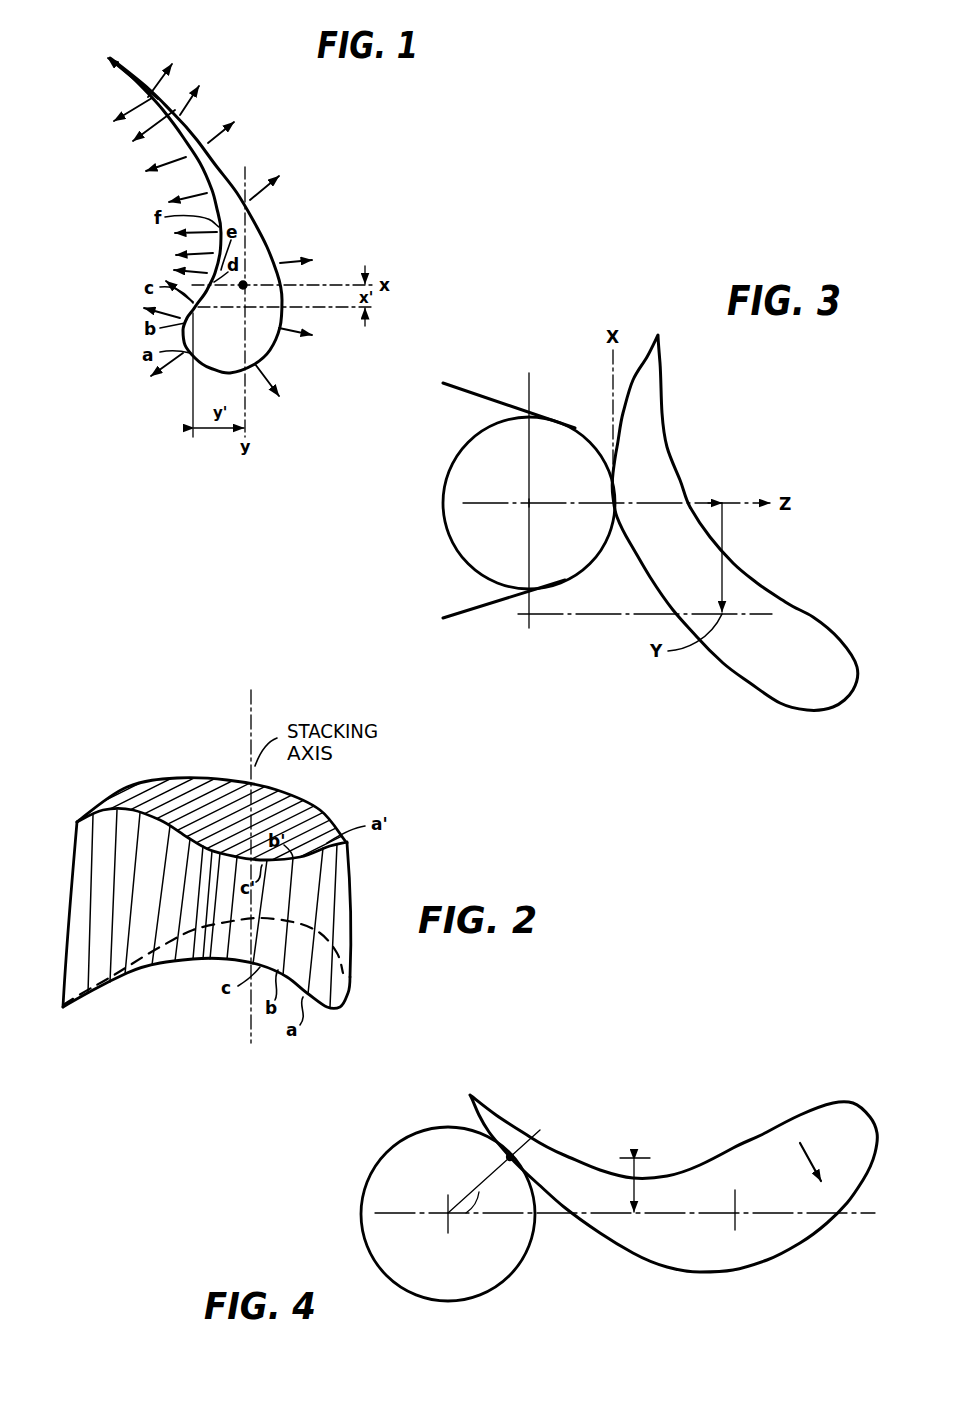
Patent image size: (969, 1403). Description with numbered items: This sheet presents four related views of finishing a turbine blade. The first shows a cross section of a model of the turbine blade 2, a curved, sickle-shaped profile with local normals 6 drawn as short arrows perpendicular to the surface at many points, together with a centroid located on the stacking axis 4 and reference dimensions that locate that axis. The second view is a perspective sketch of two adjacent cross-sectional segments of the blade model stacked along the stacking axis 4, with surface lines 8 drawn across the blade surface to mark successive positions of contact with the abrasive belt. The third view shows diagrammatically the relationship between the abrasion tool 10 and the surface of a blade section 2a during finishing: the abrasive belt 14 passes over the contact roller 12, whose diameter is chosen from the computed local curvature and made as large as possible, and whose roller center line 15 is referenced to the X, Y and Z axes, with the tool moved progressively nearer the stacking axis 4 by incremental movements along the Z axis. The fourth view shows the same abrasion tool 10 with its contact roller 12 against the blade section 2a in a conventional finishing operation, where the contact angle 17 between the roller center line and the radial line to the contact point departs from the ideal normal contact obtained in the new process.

In FIG. 1, the turbine blade 2 is at (281, 139).
In FIG. 2, the turbine blade 2 is at (239, 830).
In FIG. 3, the blade section 2a is at (725, 419).
In FIG. 4, the blade section 2a is at (709, 1082).
In FIG. 1, the stacking axis 4 is at (247, 278).
In FIG. 3, the stacking axis 4 is at (722, 613).
In FIG. 2, the stacking axis 4 is at (251, 722).
In FIG. 4, the stacking axis 4 is at (737, 1208).
In FIG. 1, the local normals 6 is at (221, 132).
In FIG. 2, the surface lines 8 is at (100, 900).
In FIG. 3, the abrasion tool 10 is at (497, 500).
In FIG. 4, the abrasion tool 10 is at (404, 1211).
In FIG. 3, the contact roller 12 is at (557, 432).
In FIG. 4, the contact roller 12 is at (411, 1157).
In FIG. 3, the abrasive belt 14 is at (483, 392).
In FIG. 3, the roller center line 15 is at (583, 505).
In FIG. 4, the contact angle 17 is at (468, 1216).